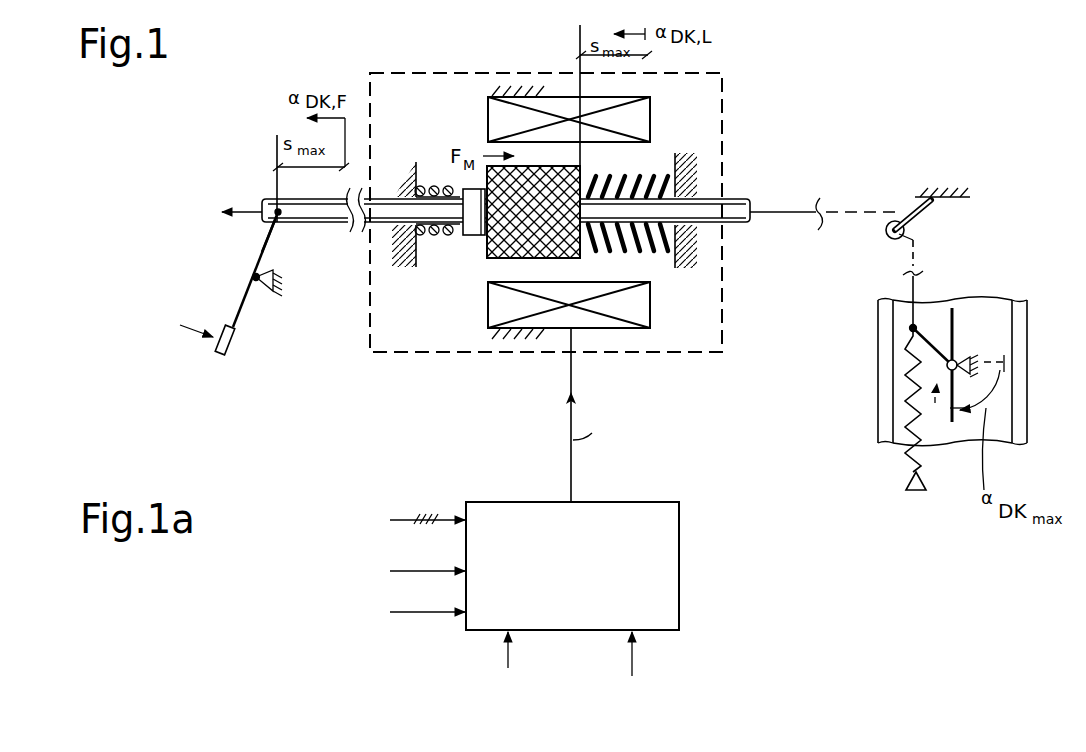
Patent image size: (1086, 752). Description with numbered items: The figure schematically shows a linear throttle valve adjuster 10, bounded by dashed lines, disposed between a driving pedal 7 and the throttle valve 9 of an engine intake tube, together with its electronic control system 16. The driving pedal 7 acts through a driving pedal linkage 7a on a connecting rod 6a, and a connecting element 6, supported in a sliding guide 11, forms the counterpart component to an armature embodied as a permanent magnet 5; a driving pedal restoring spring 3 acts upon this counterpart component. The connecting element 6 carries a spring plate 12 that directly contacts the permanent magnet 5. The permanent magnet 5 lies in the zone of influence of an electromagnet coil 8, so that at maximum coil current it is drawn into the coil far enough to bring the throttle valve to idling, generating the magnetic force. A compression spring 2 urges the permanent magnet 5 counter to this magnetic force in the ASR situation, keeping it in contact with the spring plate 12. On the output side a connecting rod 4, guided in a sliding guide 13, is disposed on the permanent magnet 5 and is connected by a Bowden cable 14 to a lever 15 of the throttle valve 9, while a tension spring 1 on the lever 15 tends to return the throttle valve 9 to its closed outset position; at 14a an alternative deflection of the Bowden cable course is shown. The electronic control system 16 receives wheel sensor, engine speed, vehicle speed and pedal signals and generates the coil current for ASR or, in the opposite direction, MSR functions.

In FIG. 1, the tension spring 1 is at (923, 448).
In FIG. 1, the compression spring 2 is at (656, 183).
In FIG. 1, the driving pedal restoring spring 3 is at (437, 234).
In FIG. 1, the connecting rod 4 is at (742, 206).
In FIG. 1, the permanent magnet 5 is at (497, 243).
In FIG. 1, the connecting element 6 is at (378, 208).
In FIG. 1, the connecting rod 6a is at (321, 208).
In FIG. 1, the driving pedal 7 is at (243, 315).
In FIG. 1, the driving pedal linkage 7a is at (262, 248).
In FIG. 1, the electromagnet coil 8 is at (635, 307).
In FIG. 1, the throttle valve 9 is at (954, 338).
In FIG. 1, the linear throttle valve adjuster 10 is at (712, 74).
In FIG. 1, the sliding guide 11 is at (411, 162).
In FIG. 1, the spring plate 12 is at (475, 213).
In FIG. 1, the sliding guide 13 is at (695, 232).
In FIG. 1, the Bowden cable 14 is at (858, 210).
In FIG. 1, the deflection of the Bowden cable course 14a is at (922, 188).
In FIG. 1, the lever 15 is at (933, 342).
In FIG. 1A, the electronic control system 16 is at (672, 545).